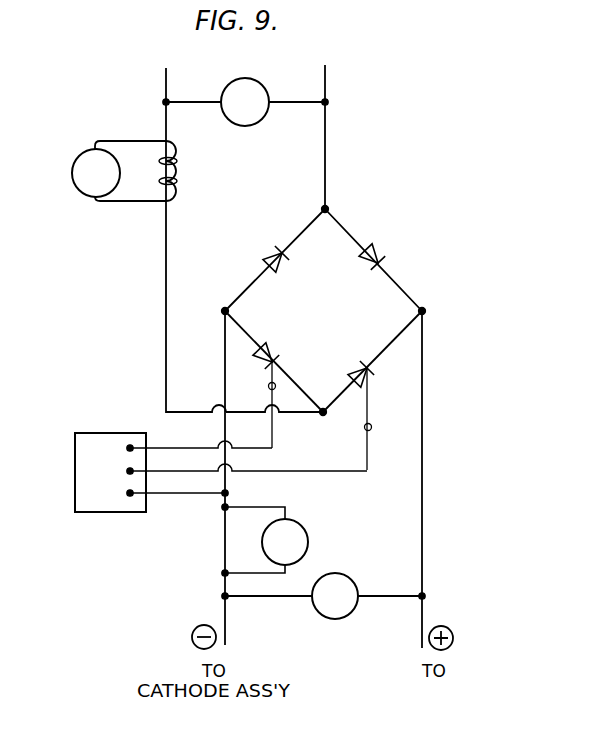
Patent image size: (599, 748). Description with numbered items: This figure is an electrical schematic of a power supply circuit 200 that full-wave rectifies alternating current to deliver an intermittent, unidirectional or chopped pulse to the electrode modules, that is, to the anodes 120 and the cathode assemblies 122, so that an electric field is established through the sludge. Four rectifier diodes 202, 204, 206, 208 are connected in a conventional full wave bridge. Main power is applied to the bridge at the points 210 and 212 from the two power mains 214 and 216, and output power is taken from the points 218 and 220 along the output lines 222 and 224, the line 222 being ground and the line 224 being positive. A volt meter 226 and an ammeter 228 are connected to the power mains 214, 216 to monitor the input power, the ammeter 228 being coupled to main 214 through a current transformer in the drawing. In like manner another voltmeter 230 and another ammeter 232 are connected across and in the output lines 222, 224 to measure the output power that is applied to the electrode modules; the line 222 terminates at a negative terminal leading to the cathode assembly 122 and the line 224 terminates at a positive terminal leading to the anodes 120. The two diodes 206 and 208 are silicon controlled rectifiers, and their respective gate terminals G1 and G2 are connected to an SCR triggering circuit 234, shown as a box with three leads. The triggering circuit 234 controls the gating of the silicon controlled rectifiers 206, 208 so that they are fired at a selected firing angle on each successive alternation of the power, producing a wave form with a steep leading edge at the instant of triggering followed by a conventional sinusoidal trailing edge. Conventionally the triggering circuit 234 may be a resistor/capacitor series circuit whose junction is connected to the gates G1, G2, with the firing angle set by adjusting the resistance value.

The power supply circuit 200 is at (468, 120).
The power main 214 is at (163, 84).
The power main 216 is at (328, 74).
The volt meter 226 is at (259, 89).
The ammeter 228 is at (82, 195).
The point 210 is at (329, 208).
The point 218 is at (223, 306).
The point 220 is at (426, 310).
The point 212 is at (324, 416).
The rectifier diode 202 is at (268, 256).
The rectifier diode 204 is at (380, 252).
The silicon controlled rectifier 206 is at (273, 350).
The silicon controlled rectifier 208 is at (362, 366).
The gate terminal G1 is at (268, 386).
The gate terminal G2 is at (372, 422).
The SCR triggering circuit 234 is at (221, 472).
The output line 222 is at (225, 545).
The output line 224 is at (424, 490).
The ammeter 232 is at (306, 531).
The voltmeter 230 is at (345, 620).
The cathode assembly 122 is at (214, 711).
The anode 120 is at (446, 691).